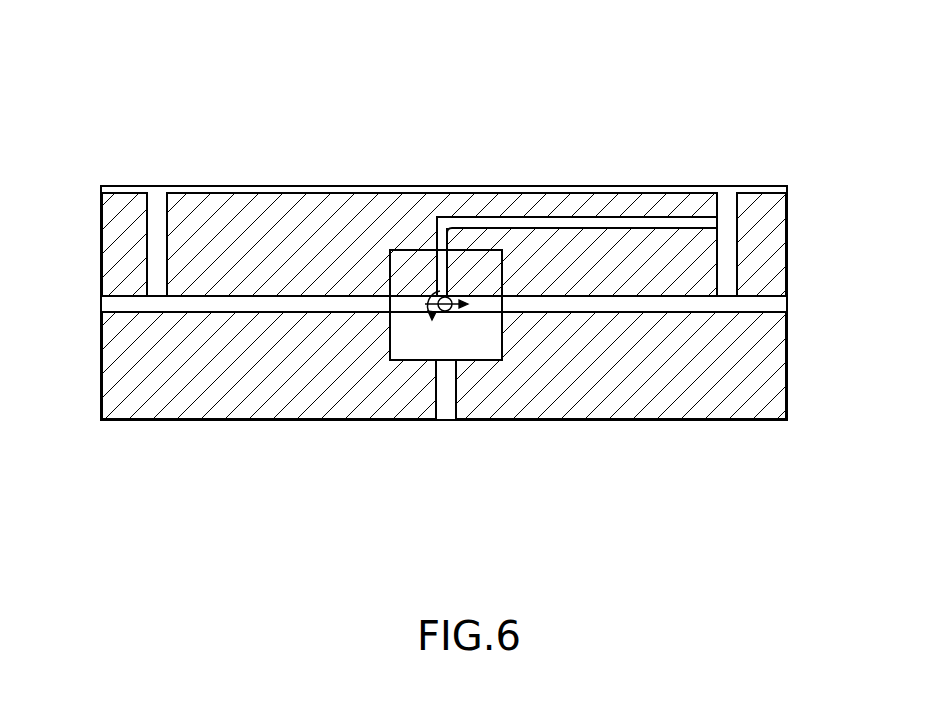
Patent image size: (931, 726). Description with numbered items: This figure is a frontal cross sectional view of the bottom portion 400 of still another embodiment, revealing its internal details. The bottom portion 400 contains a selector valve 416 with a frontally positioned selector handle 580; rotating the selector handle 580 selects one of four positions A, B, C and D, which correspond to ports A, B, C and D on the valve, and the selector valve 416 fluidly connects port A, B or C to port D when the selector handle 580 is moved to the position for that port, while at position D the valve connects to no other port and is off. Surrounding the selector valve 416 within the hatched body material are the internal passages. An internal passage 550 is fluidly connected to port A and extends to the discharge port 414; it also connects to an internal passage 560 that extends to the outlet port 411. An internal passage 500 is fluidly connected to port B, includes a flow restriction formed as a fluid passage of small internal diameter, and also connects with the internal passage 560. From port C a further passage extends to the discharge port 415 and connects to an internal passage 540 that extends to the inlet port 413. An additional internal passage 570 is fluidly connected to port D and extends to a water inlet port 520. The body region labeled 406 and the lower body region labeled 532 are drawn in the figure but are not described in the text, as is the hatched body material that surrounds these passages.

The bottom portion 400 is at (710, 87).
The manifold body 406 is at (331, 186).
The outlet port 411 is at (727, 204).
The inlet port 413 is at (157, 200).
The discharge port 414 is at (788, 299).
The discharge port 415 is at (110, 306).
The selector valve 416 is at (410, 348).
The internal passage 500 is at (560, 218).
The water inlet port 520 is at (447, 420).
The body portion 532 is at (218, 305).
The internal passage 540 is at (150, 252).
The internal passage 550 is at (590, 302).
The internal passage 560 is at (740, 235).
The internal passage 570 is at (452, 378).
The selector handle 580 is at (452, 298).